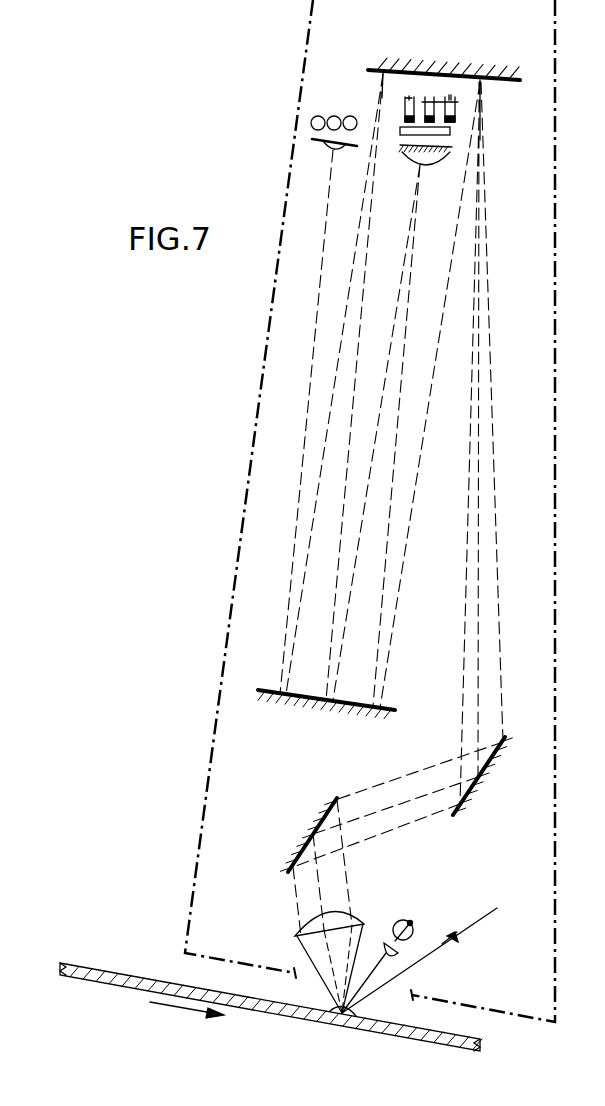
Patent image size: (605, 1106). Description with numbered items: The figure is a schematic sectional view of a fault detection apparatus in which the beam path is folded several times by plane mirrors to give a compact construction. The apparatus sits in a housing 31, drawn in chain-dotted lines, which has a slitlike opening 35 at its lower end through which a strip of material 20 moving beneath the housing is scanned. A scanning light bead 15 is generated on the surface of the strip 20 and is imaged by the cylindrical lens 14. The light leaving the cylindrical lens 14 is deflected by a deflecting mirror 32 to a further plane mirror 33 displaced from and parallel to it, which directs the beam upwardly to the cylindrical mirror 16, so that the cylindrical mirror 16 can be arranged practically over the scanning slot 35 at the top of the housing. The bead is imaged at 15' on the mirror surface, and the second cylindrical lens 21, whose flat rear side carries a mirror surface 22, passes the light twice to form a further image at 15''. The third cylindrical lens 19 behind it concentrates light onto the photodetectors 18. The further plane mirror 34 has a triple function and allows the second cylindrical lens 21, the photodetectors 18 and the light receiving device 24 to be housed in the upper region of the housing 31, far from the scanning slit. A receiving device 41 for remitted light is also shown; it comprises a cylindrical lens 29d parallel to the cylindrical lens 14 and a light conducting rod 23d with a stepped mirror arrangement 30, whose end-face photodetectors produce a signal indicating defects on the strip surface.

The cylindrical lens 14 is at (306, 924).
The scanning light bead 15 is at (361, 1037).
The image of the scanning light bead 15' is at (520, 110).
The image of the scanning light bead 15'' is at (350, 69).
The cylindrical mirror 16 is at (430, 70).
The photodetectors 18 is at (404, 100).
The third cylindrical lens 19 is at (450, 132).
The strip of material 20 is at (292, 1012).
The second cylindrical lens 21 is at (420, 166).
The mirror surface 22 is at (452, 150).
The light conducting rod 23d is at (412, 923).
The light receiving device 24 is at (306, 130).
The cylindrical lens 29d is at (400, 956).
The stepped mirror arrangement 30 is at (410, 921).
The housing 31 is at (244, 462).
The deflecting mirror 32 is at (314, 824).
The further plane mirror 33 is at (488, 772).
The further plane mirror 34 is at (322, 710).
The opening 35 is at (308, 980).
The receiving device for remitted light 41 is at (384, 920).